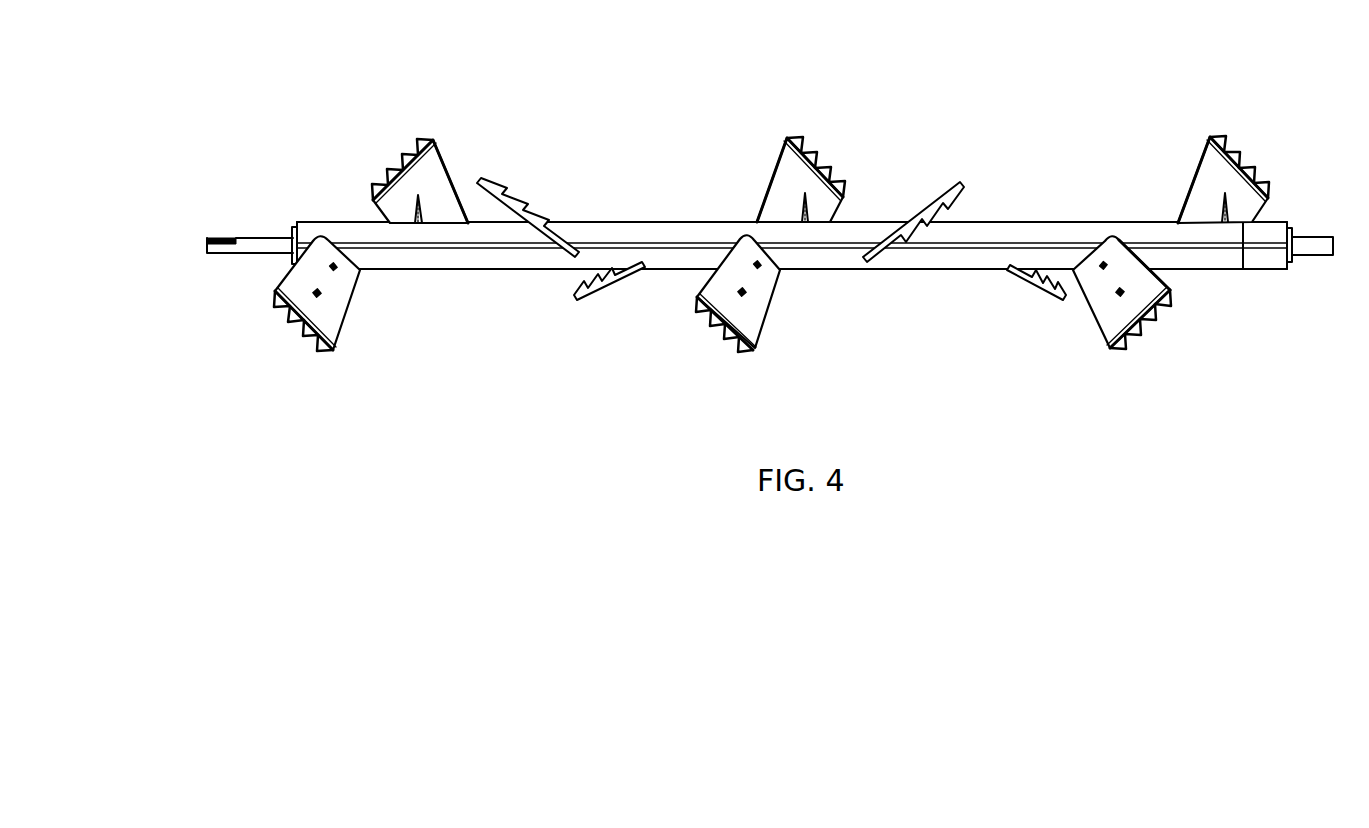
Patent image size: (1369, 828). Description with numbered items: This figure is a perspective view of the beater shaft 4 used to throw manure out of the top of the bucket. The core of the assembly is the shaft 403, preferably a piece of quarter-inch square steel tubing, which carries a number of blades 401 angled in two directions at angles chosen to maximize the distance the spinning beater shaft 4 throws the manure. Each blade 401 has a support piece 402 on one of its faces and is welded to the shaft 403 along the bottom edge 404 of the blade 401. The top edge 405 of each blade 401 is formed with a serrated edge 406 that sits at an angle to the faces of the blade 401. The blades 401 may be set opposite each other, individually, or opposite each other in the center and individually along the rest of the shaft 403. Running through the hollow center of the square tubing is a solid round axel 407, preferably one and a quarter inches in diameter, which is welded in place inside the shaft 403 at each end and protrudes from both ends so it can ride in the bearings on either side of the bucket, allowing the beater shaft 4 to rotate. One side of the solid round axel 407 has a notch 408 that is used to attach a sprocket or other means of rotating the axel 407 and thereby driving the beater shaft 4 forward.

The beater shaft 4 is at (262, 194).
The blade 401 is at (727, 297).
The support piece 402 is at (793, 210).
The shaft 403 is at (1030, 228).
The bottom edge 404 is at (1096, 272).
The top edge 405 is at (1169, 301).
The serrated edge 406 is at (944, 182).
The solid round axel 407 is at (262, 248).
The notch 408 is at (204, 243).